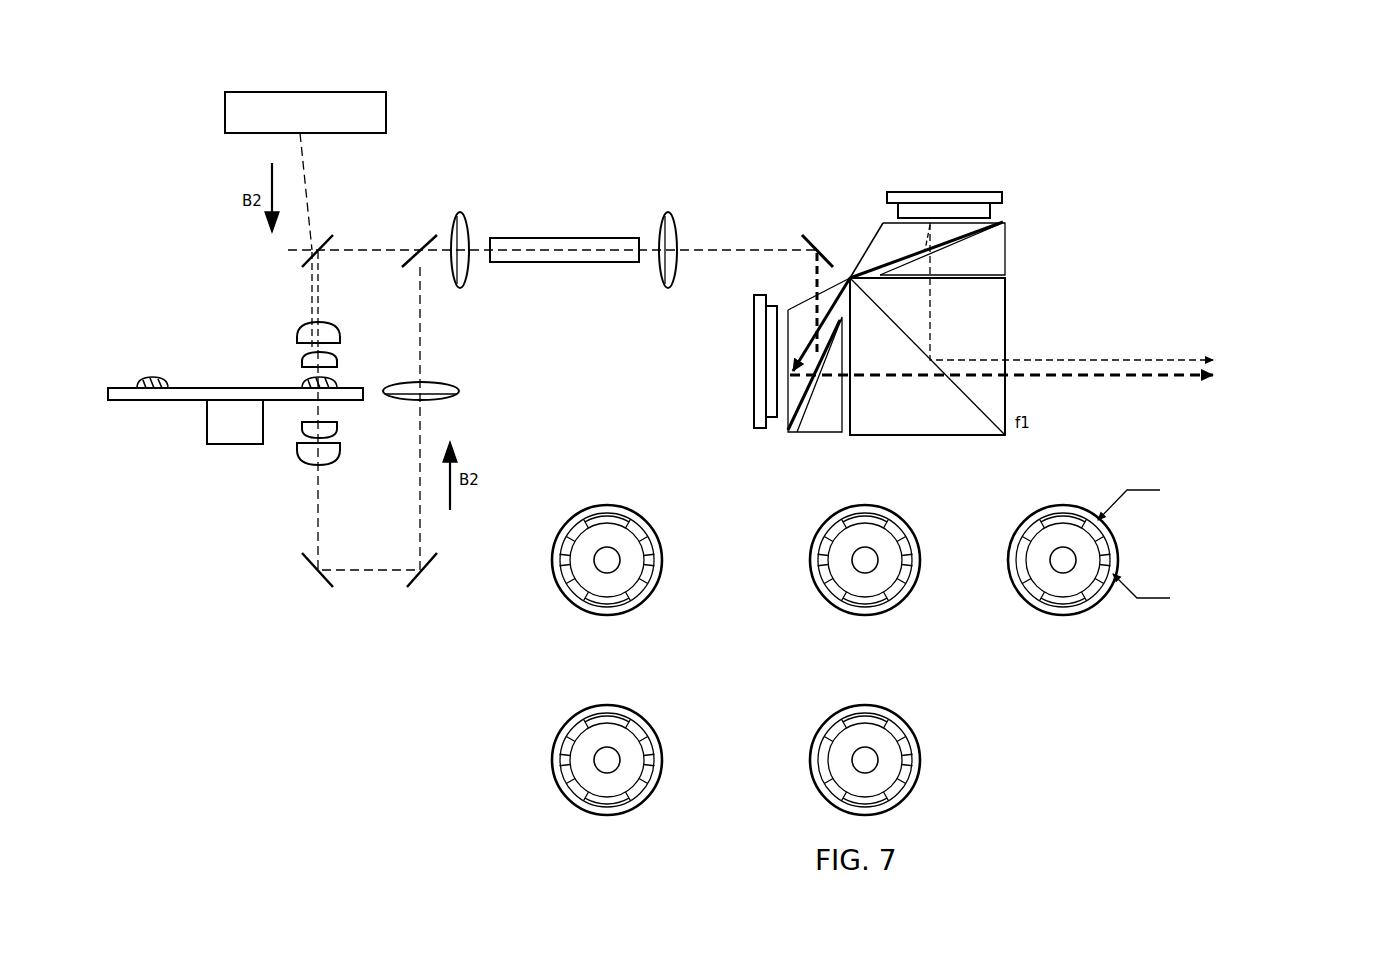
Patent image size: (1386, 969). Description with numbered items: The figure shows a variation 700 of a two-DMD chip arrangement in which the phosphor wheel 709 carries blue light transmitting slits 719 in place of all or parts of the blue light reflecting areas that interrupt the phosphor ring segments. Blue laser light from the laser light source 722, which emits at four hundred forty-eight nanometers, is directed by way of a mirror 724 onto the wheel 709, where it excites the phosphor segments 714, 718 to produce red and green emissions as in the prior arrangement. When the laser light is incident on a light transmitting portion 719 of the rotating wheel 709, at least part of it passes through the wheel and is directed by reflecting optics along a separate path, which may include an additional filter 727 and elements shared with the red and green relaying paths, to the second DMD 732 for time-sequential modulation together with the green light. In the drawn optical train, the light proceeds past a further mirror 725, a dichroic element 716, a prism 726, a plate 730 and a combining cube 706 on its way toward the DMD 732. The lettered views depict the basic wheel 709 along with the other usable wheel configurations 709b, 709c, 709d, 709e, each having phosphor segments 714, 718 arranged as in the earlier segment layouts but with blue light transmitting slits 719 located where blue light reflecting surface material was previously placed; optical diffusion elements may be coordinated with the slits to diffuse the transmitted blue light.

The two-DMD chip arrangement variation 700 is at (1049, 130).
The light combining prism 706 is at (1007, 322).
The phosphor wheel 709 is at (150, 402).
The phosphor wheel configuration (View B) 709b is at (811, 572).
The phosphor wheel configuration (View C) 709c is at (1083, 616).
The phosphor wheel configuration (View D) 709d is at (553, 771).
The phosphor wheel configuration (View E) 709e is at (920, 770).
The phosphor segment 714 is at (574, 594).
The dichroic mirror 716 is at (861, 236).
The phosphor segment 718 is at (300, 379).
The blue light transmitting slit 719 is at (563, 560).
The 448 nm laser light source 722 is at (225, 110).
The mirror 724 is at (326, 232).
The mirror 725 is at (809, 232).
The prism 726 is at (795, 307).
The additional filter 727 is at (429, 232).
The filter plate 730 is at (943, 192).
The second DMD 732 is at (754, 364).